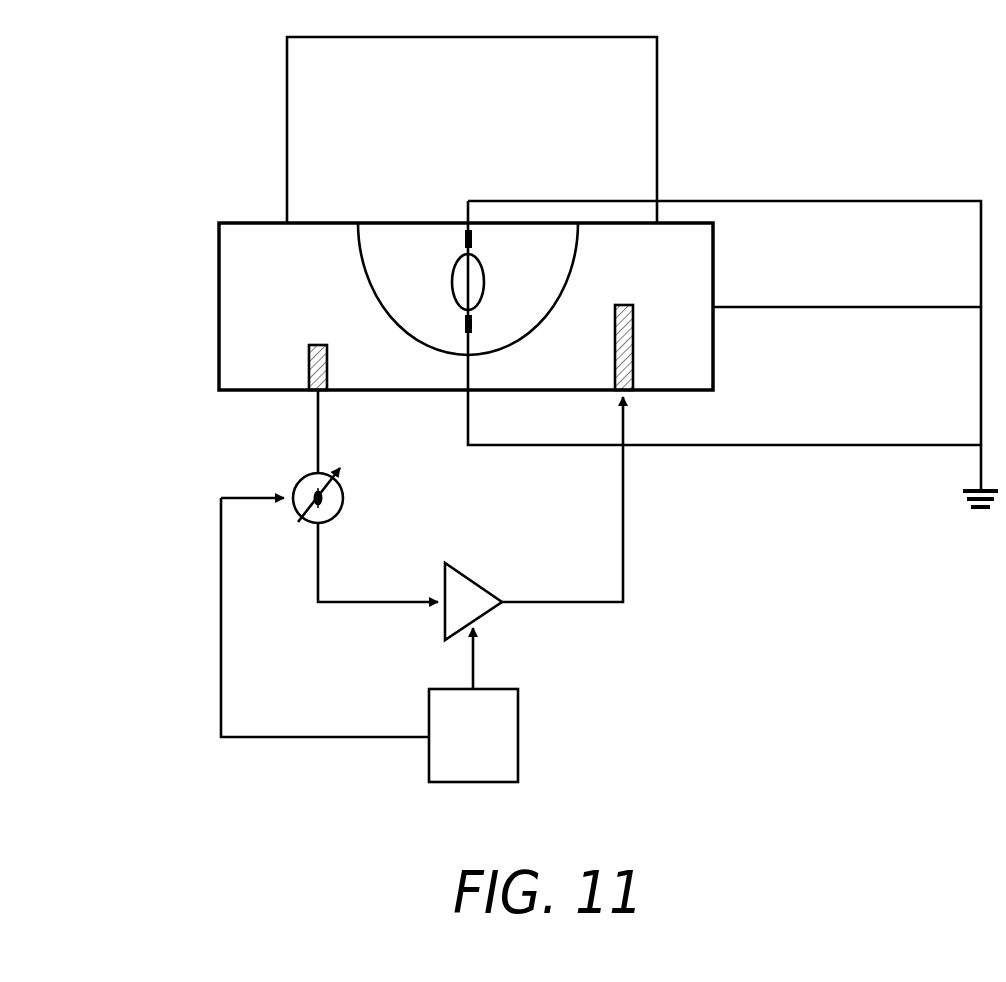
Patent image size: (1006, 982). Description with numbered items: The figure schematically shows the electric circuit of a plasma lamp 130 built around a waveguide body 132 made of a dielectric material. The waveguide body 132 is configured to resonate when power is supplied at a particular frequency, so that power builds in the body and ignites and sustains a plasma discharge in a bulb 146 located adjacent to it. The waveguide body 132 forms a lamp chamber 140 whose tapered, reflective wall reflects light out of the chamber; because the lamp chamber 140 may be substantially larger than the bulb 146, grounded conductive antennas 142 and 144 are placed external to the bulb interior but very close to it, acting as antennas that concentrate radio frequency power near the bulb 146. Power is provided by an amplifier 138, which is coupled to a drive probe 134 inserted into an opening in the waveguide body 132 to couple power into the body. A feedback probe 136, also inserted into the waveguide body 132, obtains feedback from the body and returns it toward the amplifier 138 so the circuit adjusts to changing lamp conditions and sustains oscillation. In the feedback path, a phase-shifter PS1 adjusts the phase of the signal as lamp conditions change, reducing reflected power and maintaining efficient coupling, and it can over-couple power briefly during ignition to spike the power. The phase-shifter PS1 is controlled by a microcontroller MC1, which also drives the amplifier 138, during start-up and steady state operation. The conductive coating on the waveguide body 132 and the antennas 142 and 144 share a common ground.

The plasma processing system 130 is at (822, 110).
The waveguide body 132 is at (299, 305).
The drive probe 134 is at (634, 318).
The feedback probe 136 is at (329, 368).
The amplifier 138 is at (490, 564).
The lamp chamber 140 is at (425, 262).
The conductive antenna 142 is at (476, 238).
The conductive antenna 144 is at (464, 330).
The bulb 146 is at (470, 281).
The phase-shifter PS1 is at (304, 477).
The microcontroller MC1 is at (473, 735).